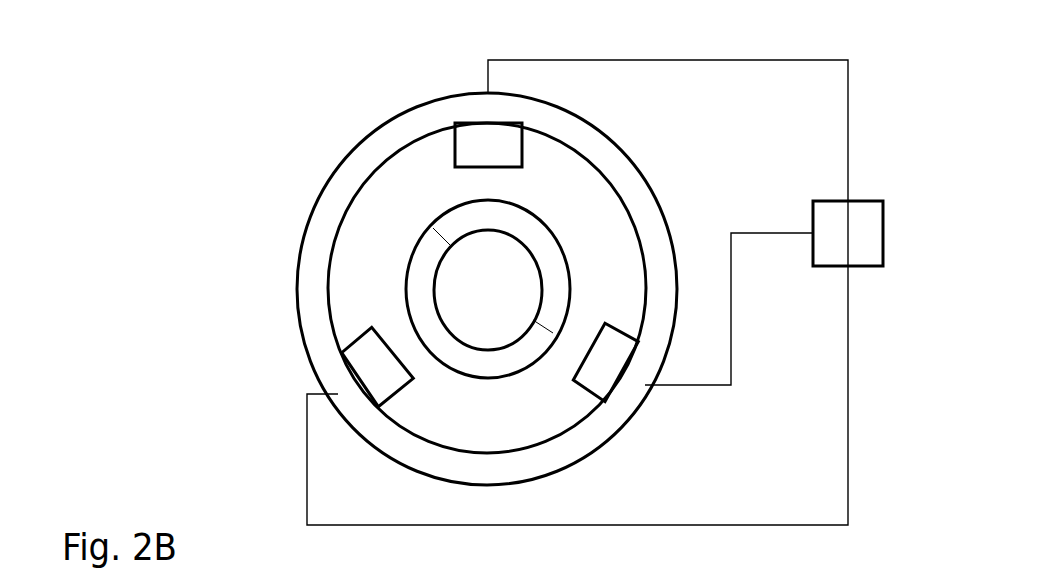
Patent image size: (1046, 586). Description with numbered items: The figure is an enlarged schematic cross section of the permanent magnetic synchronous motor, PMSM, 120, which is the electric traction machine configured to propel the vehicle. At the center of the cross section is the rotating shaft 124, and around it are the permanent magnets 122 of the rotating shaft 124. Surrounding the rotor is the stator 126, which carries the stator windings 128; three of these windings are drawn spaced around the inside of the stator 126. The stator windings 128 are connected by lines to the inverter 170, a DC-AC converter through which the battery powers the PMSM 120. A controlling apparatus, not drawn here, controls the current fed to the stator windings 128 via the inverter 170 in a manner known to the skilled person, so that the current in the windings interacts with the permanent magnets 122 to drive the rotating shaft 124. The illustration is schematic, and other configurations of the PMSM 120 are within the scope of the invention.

The permanent magnetic synchronous motor 120 is at (228, 197).
The permanent magnets 122 is at (520, 228).
The rotating shaft 124 is at (520, 307).
The stator 126 is at (340, 160).
The stator windings 128 is at (477, 140).
The inverter 170 is at (848, 268).